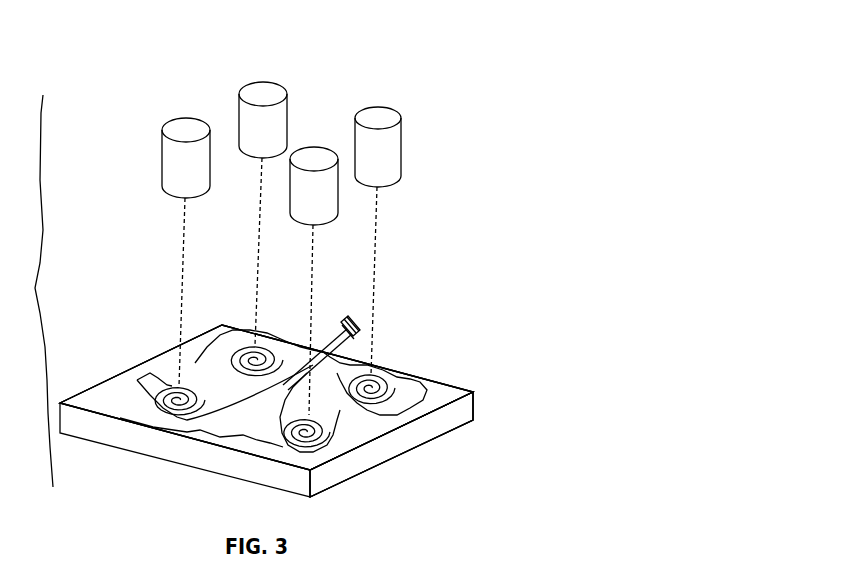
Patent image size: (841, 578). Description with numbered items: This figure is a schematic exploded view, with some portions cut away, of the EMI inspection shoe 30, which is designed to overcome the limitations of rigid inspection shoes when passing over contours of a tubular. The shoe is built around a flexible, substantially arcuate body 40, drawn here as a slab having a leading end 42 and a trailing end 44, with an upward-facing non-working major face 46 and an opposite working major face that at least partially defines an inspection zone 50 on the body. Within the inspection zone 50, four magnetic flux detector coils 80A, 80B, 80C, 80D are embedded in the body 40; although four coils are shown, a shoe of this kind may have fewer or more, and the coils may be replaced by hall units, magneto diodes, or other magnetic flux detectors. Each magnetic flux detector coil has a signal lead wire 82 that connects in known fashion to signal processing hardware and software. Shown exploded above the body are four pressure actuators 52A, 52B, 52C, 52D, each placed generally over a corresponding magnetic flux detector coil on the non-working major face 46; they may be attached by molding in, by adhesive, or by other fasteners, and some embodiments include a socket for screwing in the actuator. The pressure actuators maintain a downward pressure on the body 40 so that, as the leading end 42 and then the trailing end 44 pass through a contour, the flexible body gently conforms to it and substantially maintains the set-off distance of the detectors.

The EMI inspection shoe 30 is at (457, 91).
The flexible, substantially arcuate body 40 is at (173, 457).
The leading end 42 is at (463, 418).
The trailing end 44 is at (107, 397).
The non-working major face 46 is at (461, 387).
The inspection zone 50 is at (372, 420).
The pressure actuator 52A is at (182, 128).
The pressure actuator 52B is at (313, 158).
The pressure actuator 52C is at (263, 90).
The pressure actuator 52D is at (377, 117).
The magnetic flux detector coil 80A is at (175, 397).
The magnetic flux detector coil 80B is at (327, 428).
The magnetic flux detector coil 80C is at (250, 358).
The magnetic flux detector coil 80D is at (385, 378).
The signal lead wire 82 is at (358, 339).